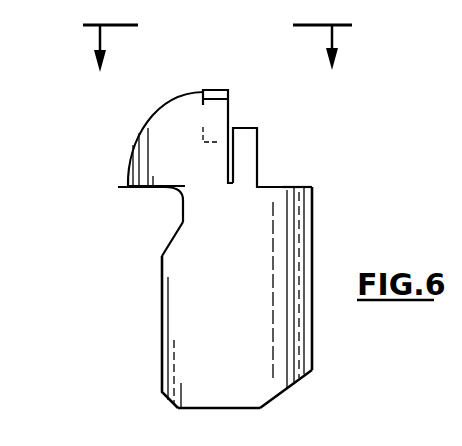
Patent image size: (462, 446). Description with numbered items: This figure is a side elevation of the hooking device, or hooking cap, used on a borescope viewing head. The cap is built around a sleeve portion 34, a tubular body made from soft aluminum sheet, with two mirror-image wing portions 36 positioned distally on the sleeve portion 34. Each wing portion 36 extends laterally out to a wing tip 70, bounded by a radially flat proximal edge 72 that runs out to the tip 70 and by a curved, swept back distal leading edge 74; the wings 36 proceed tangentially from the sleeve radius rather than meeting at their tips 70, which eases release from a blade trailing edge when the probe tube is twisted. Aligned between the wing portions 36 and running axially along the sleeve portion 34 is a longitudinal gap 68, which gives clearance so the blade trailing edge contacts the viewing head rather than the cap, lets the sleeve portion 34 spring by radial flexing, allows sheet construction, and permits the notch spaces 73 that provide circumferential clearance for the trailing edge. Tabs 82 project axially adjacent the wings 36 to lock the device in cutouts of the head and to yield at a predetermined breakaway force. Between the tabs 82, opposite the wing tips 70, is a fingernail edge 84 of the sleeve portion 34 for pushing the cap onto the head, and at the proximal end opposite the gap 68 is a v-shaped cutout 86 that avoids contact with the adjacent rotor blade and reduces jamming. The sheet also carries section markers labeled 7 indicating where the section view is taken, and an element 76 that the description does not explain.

The section line 7- 7 is at (215, 42).
The sleeve portion 34 is at (248, 316).
The wing portion 36 is at (182, 168).
The longitudinal gap 68 is at (156, 342).
The wing tip 70 is at (118, 187).
The proximal edge 72 is at (162, 193).
The notch space 73 is at (172, 220).
The leading edge 74 is at (133, 143).
The tab 76 is at (213, 123).
The tab 82 is at (247, 157).
The fingernail edge 84 is at (282, 187).
The v-shaped cutout 86 is at (300, 382).